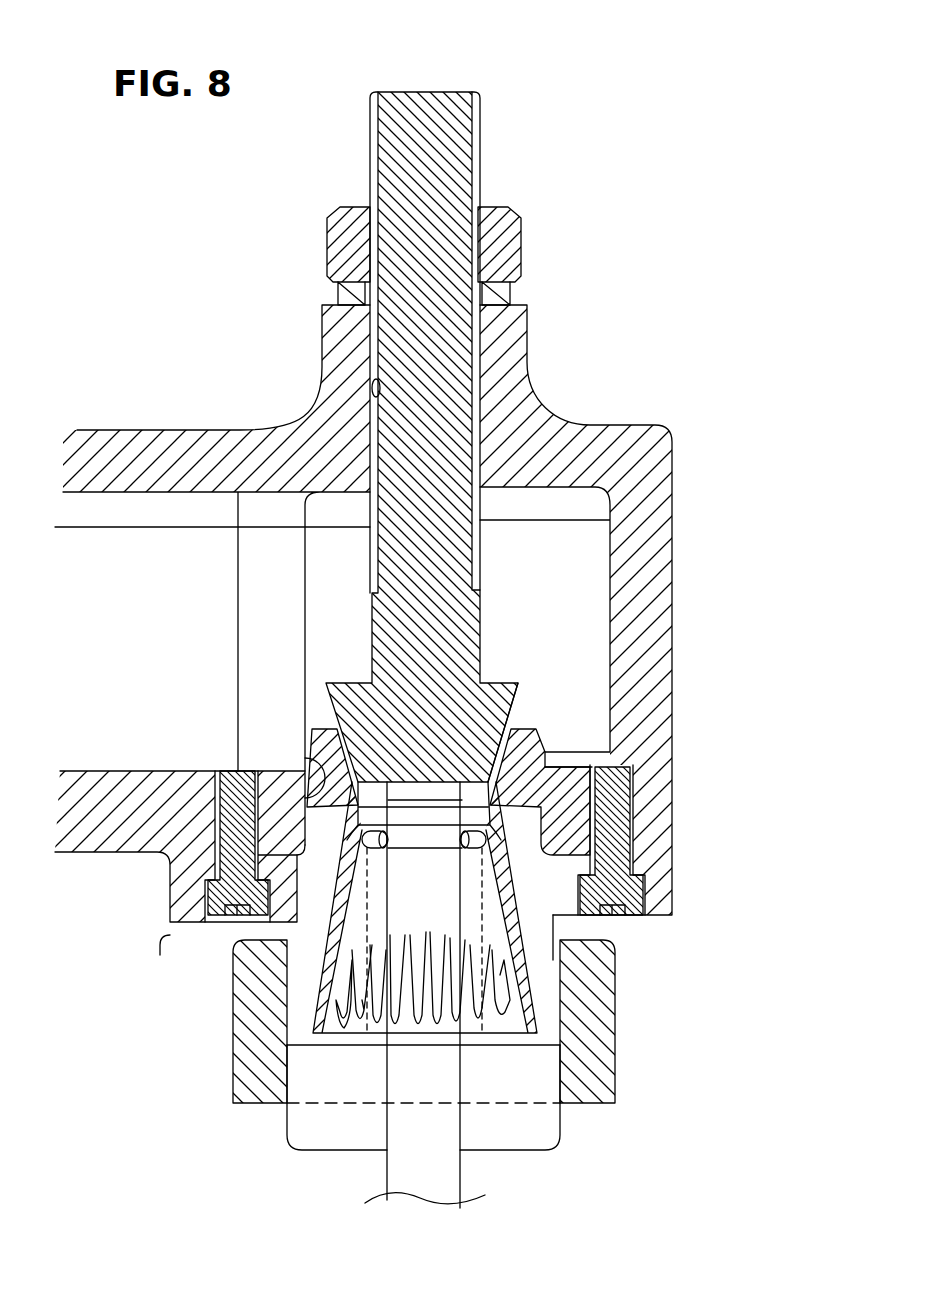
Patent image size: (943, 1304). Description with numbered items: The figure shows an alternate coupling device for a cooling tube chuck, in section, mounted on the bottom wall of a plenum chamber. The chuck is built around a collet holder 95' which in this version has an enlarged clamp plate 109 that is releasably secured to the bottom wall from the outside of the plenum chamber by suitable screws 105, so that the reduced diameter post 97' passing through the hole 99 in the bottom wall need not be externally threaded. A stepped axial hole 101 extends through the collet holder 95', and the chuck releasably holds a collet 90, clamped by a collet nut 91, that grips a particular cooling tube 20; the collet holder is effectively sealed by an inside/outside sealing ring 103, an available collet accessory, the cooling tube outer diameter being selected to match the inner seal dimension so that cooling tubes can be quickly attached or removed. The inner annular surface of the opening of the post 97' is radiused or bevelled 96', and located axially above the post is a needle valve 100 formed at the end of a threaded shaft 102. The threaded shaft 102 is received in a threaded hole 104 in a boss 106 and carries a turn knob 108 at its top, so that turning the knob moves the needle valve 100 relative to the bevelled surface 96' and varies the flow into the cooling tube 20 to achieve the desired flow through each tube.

The cooling tube 20 is at (420, 1169).
The collet 90 is at (545, 1150).
The collet nut 91 is at (592, 1043).
The collet holder 95' is at (530, 974).
The radiused/bevelled inner annular surface 96' is at (336, 711).
The post 97' is at (623, 778).
The hole 99 is at (305, 757).
The needle valve 100 is at (513, 692).
The stepped axial hole 101 is at (480, 888).
The threaded shaft 102 is at (435, 381).
The inside/outside sealing ring 103 is at (367, 848).
The threaded hole 104 is at (372, 386).
The screws 105 is at (235, 910).
The boss 106 is at (508, 328).
The turn knob 108 is at (350, 243).
The enlarged clamp plate 109 is at (180, 885).